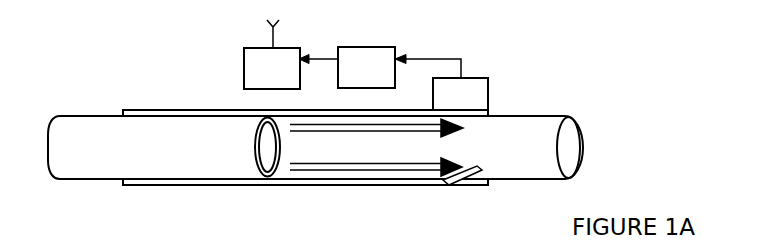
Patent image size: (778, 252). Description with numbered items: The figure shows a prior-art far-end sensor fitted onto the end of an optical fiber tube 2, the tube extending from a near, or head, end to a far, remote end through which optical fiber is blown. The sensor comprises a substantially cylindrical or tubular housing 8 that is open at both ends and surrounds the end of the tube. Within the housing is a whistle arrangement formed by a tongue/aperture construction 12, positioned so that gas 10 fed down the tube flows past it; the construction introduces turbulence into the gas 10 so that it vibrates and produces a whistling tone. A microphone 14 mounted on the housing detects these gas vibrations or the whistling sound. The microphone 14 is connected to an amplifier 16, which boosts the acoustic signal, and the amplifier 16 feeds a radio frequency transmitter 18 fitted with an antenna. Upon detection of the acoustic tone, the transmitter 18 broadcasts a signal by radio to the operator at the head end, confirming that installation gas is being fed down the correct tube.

The optical fiber tube 2 is at (70, 180).
The tubular housing 8 is at (300, 183).
The gas 10 is at (391, 147).
The tongue/aperture construction 12 is at (460, 186).
The microphone 14 is at (441, 84).
The amplifier 16 is at (347, 67).
The radio frequency transmitter 18 is at (272, 54).